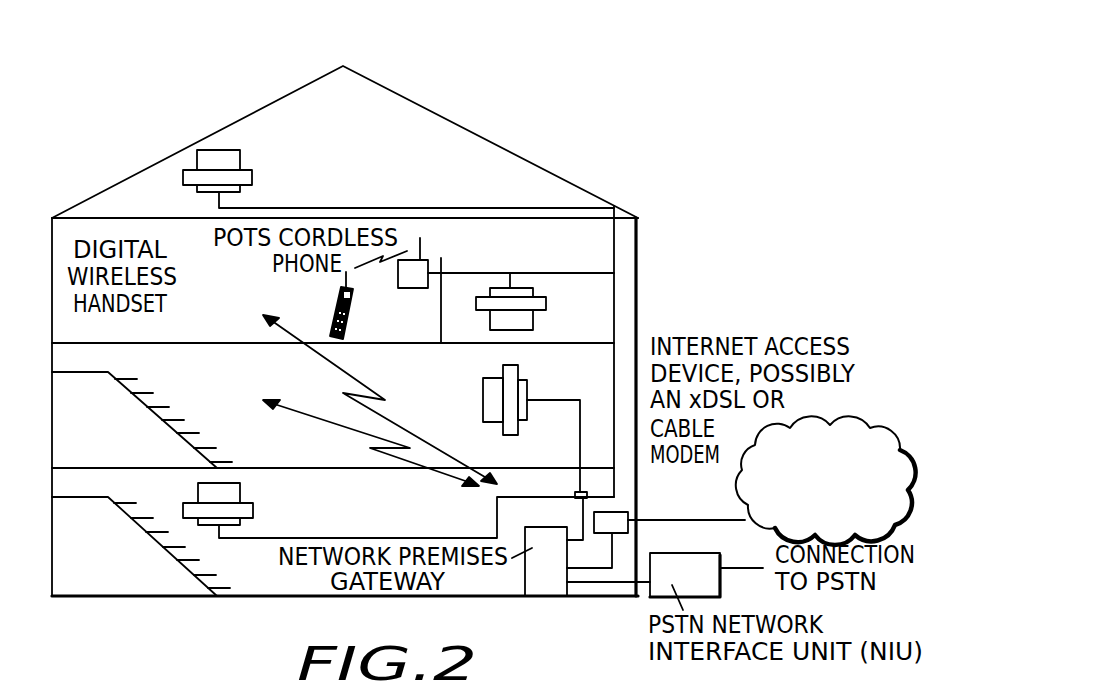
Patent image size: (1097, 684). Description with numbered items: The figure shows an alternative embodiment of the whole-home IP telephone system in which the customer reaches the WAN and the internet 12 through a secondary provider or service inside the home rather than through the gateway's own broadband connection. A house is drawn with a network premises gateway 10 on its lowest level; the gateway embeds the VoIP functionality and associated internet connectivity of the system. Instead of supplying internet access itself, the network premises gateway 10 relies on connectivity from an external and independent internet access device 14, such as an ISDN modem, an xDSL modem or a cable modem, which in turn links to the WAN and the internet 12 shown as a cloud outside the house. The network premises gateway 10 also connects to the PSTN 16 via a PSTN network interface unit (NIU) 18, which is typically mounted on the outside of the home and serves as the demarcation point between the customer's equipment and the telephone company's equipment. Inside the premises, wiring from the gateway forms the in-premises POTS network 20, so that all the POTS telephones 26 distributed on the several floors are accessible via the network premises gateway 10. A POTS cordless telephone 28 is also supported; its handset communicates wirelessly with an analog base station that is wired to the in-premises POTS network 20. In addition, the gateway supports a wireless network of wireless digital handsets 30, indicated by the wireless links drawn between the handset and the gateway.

The network premises gateway 10 is at (542, 590).
The WAN and the internet 12 is at (873, 418).
The internet access device 14 is at (622, 512).
The PSTN 16 is at (755, 565).
The PSTN network interface unit (NIU) 18 is at (645, 634).
The in-premises POTS network 20 is at (578, 492).
The POTS telephones 26 is at (233, 158).
The POTS cordless telephone 28 is at (353, 314).
The wireless digital handsets 30 is at (262, 317).